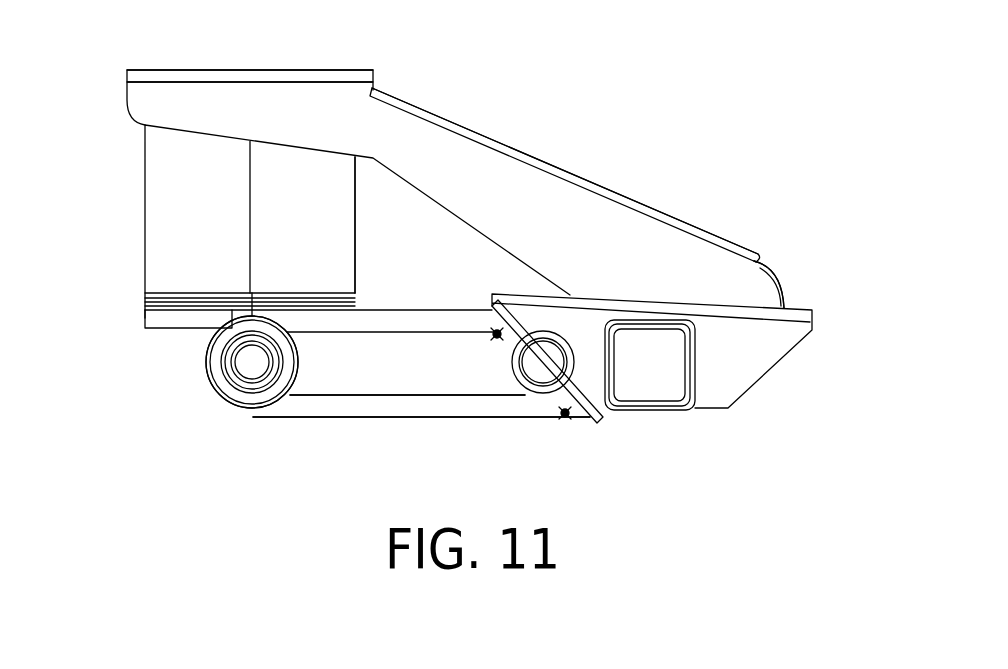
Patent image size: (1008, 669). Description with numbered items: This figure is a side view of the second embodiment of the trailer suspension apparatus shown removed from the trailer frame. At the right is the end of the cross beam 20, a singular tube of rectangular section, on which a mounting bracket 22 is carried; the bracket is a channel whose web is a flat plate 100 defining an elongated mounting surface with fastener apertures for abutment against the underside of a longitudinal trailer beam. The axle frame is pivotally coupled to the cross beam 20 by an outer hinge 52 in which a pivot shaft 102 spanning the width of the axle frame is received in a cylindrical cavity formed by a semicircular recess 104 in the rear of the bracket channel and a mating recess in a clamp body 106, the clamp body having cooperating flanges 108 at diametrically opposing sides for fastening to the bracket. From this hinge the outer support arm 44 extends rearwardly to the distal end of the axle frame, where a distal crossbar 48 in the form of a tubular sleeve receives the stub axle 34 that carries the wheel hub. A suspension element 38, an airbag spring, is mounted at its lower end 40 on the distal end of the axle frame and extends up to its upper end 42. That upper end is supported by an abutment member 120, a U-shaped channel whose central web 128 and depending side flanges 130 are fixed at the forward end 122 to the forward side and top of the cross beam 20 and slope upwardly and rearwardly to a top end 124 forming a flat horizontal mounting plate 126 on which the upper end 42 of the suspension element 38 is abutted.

The cross beam 20 is at (647, 398).
The mounting bracket 22 is at (704, 300).
The second stub axle 34 is at (225, 373).
The suspension element 38 is at (178, 188).
The lower end of suspension element 40 is at (185, 293).
The upper end of suspension element 42 is at (122, 105).
The outer support arm 44 is at (358, 385).
The distal crossbar 48 is at (223, 400).
The outer hinge 52 is at (507, 402).
The flat plate 100 is at (798, 312).
The pivot shaft 102 is at (543, 362).
The semicircular recess 104 is at (568, 345).
The clamp body 106 is at (538, 395).
The cooperating flanges 108 is at (492, 330).
The abutment member 120 is at (547, 161).
The forward end of abutment member 122 is at (776, 278).
The top end of abutment member 124 is at (264, 70).
The mounting plate 126 is at (163, 80).
The central web 128 is at (440, 118).
The side flanges 130 is at (377, 135).